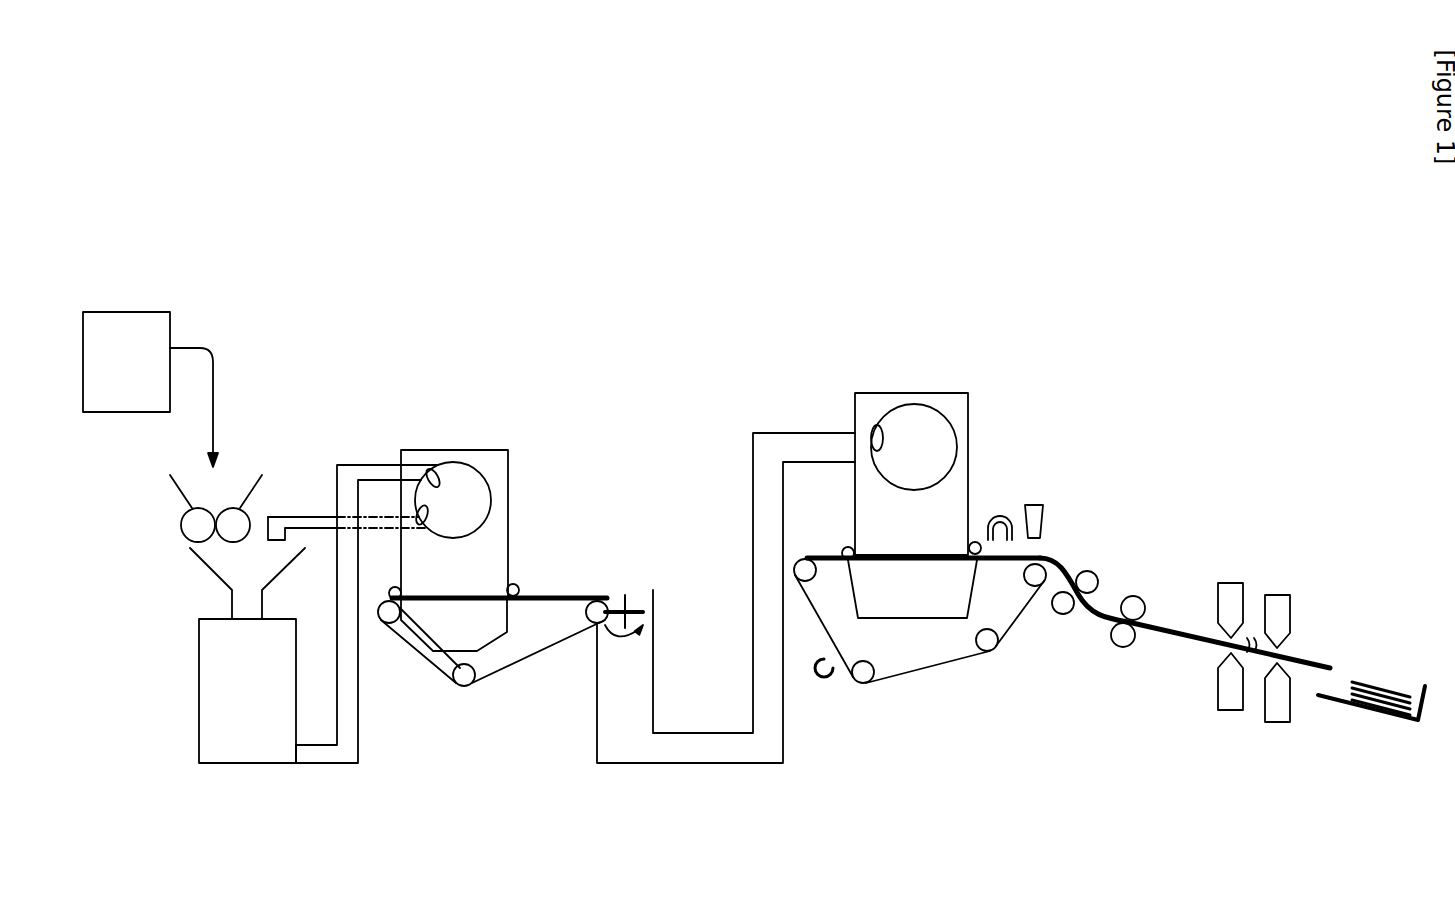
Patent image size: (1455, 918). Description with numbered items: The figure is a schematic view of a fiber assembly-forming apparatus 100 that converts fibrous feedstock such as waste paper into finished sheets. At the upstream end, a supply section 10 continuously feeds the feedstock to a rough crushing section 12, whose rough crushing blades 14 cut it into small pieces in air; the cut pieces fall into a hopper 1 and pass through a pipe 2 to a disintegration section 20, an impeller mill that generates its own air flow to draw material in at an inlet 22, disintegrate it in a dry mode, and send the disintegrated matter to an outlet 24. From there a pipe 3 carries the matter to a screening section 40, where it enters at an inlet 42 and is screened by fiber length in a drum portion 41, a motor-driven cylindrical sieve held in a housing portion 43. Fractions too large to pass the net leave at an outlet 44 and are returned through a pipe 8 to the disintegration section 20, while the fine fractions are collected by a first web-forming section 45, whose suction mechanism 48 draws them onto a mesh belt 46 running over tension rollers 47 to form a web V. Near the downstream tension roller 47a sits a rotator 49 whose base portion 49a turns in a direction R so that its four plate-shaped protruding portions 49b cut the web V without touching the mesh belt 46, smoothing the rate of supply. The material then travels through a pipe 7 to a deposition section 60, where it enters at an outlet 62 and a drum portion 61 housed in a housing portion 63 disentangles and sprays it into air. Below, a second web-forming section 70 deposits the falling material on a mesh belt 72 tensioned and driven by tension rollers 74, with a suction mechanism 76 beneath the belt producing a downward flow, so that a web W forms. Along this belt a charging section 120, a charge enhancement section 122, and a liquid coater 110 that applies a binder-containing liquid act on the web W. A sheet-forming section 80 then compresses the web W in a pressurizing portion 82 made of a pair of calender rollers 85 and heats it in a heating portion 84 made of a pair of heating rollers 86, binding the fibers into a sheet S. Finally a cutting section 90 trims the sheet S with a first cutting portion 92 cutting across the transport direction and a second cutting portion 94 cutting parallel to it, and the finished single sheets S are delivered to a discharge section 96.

The fiber assembly-forming apparatus 100 is at (1087, 322).
The supply section 10 is at (175, 308).
The rough crushing section 12 is at (178, 494).
The rough crushing blades 14 is at (198, 525).
The hopper 1 is at (205, 566).
The pipe 2 is at (228, 603).
The pipe 3 is at (343, 608).
The disintegration section 20 is at (214, 722).
The inlet 22 is at (245, 622).
The outlet 24 is at (296, 750).
The pipe 8 is at (317, 523).
The screening section 40 is at (479, 522).
The drum portion 41 is at (492, 500).
The inlet 42 is at (436, 470).
The housing portion 43 is at (508, 478).
The outlet 44 is at (418, 512).
The first web-forming section 45 is at (485, 639).
The mesh belt 46 is at (508, 665).
The tension rollers 47 is at (389, 624).
The tension roller 47a is at (590, 625).
The suction mechanism 48 is at (440, 645).
The rotator 49 is at (640, 568).
The base portion 49a is at (628, 612).
The protruding portions 49b is at (615, 585).
The web V is at (533, 590).
The direction R is at (650, 638).
The pipe 7 is at (640, 676).
The deposition section 60 is at (959, 445).
The drum portion 61 is at (957, 447).
The outlet 62 is at (878, 425).
The housing portion 63 is at (968, 415).
The second web-forming section 70 is at (920, 625).
The mesh belt 72 is at (845, 553).
The tension rollers 74 is at (805, 582).
The suction mechanism 76 is at (905, 600).
The charging section 120 is at (815, 680).
The charge enhancement section 122 is at (1000, 512).
The liquid coater 110 is at (1033, 502).
The web W is at (1055, 556).
The sheet-forming section 80 is at (1130, 598).
The pressurizing portion 82 is at (1099, 595).
The calender rollers 85 is at (1086, 575).
The heating portion 84 is at (1153, 626).
The heating rollers 86 is at (1148, 595).
The cutting section 90 is at (1274, 610).
The first cutting portion 92 is at (1235, 575).
The second cutting portion 94 is at (1247, 522).
The sheet S is at (1193, 628).
The discharge section 96 is at (1403, 724).